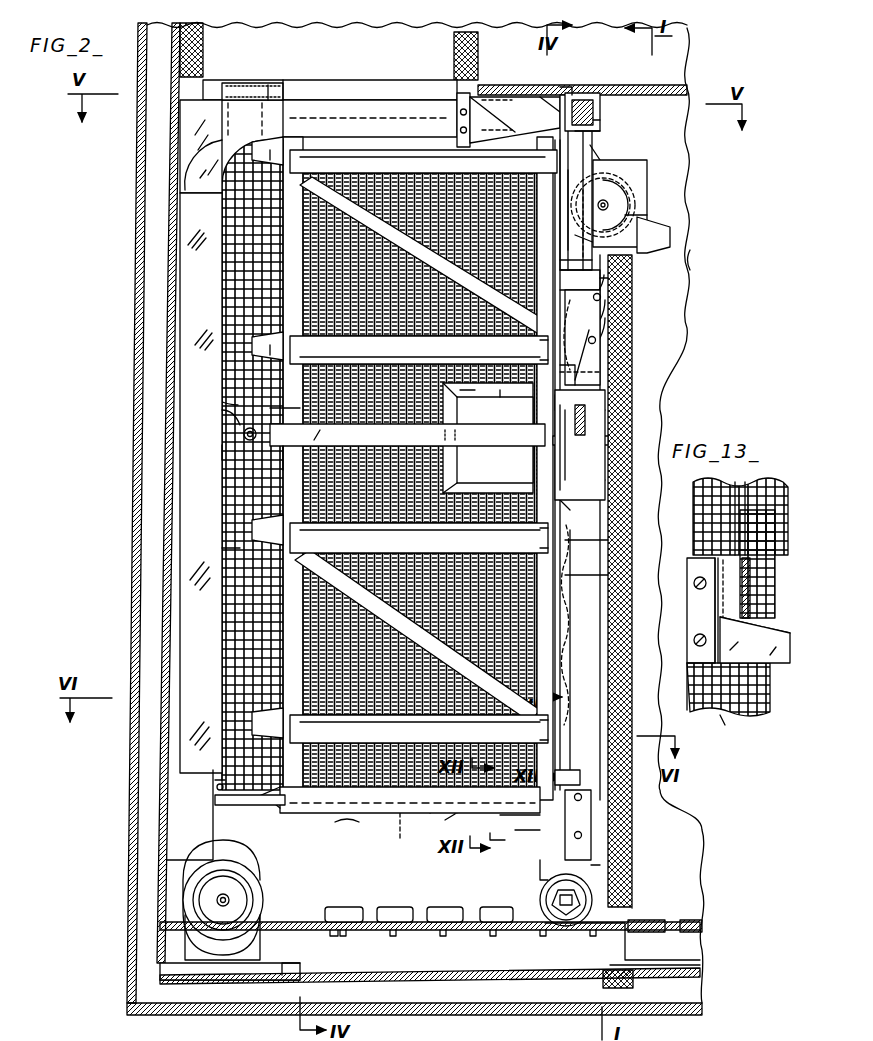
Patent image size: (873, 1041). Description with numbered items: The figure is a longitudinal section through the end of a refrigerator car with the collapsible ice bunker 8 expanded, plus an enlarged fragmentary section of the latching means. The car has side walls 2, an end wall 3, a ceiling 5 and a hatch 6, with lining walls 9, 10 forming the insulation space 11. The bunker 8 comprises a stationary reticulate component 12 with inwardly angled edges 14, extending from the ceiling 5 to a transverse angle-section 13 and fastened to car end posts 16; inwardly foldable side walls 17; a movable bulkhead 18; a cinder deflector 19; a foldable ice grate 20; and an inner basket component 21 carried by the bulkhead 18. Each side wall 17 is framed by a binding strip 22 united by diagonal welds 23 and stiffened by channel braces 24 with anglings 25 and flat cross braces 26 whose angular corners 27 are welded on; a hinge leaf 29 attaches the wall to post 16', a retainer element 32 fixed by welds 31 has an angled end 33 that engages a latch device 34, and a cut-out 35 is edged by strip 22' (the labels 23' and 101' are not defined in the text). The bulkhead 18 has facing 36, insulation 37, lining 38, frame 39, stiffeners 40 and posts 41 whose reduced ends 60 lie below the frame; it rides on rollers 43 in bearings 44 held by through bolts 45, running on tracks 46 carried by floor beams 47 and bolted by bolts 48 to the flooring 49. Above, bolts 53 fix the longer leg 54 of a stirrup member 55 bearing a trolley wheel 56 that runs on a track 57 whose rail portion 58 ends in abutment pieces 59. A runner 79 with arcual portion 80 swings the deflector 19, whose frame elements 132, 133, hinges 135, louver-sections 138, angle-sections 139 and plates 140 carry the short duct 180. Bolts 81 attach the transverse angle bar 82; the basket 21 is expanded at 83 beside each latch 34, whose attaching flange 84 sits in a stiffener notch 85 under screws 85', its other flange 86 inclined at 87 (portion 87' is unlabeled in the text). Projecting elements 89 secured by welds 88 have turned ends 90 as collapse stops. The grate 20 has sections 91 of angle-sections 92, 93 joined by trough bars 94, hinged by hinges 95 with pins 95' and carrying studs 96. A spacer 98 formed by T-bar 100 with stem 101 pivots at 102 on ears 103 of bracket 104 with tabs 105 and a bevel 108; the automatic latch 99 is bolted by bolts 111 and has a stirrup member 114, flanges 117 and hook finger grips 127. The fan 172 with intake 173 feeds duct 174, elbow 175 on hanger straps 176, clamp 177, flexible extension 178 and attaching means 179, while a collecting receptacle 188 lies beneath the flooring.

In FIG. 2, the side wall 2 is at (686, 342).
In FIG. 2, the end wall 3 is at (135, 458).
In FIG. 2, the inner roof or ceiling 5 is at (608, 87).
In FIG. 2, the hatch 6 is at (454, 56).
In FIG. 2, the collapsible bunker 8 is at (215, 670).
In FIG. 2, the side lining wall 9 is at (690, 285).
In FIG. 2, the end lining wall 10 is at (175, 333).
In FIG. 2, the insulation space 11 is at (165, 502).
In FIG. 2, the stationary end wall or reticulate component 12 is at (220, 552).
In FIG. 2, the transverse angle-section 13 is at (250, 811).
In FIG. 2, the inwardly angled side edges 14 is at (222, 275).
In FIG. 2, the vertical posts 16 is at (234, 457).
In FIG. 2, the vertical post 16' is at (263, 79).
In FIG. 2, the side walls 17 is at (379, 88).
In FIG. 2, the movable bulkhead 18 is at (636, 360).
In FIG. 2, the cinder deflector 19 is at (602, 160).
In FIG. 2, the ice grate 20 is at (410, 816).
In FIG. 2, the inner basket component 21 is at (563, 643).
In FIG. 13, the inner basket component 21 is at (750, 514).
In FIG. 2, the binding strip 22 is at (432, 450).
In FIG. 2, the strip 22' is at (509, 406).
In FIG. 2, the diagonal welds 23 is at (305, 446).
In FIG. 2, the corner member 23' is at (471, 406).
In FIG. 2, the transverse braces 24 is at (370, 417).
In FIG. 2, the anglings 25 is at (422, 169).
In FIG. 2, the cross braces 26 is at (412, 257).
In FIG. 2, the angular corners 27 is at (559, 302).
In FIG. 2, the hinge leaf 29 is at (278, 148).
In FIG. 2, the welds 31 is at (530, 350).
In FIG. 2, the retainer element 32 is at (576, 740).
In FIG. 13, the retainer element 32 is at (750, 575).
In FIG. 2, the outwardly angled end 33 is at (563, 372).
In FIG. 13, the outwardly angled end 33 is at (750, 555).
In FIG. 13, the latch device 34 is at (723, 620).
In FIG. 2, the cut-out 35 is at (515, 478).
In FIG. 2, the tongue-and-groove facing 36 is at (600, 517).
In FIG. 2, the insulation 37 is at (608, 574).
In FIG. 2, the tongue-and-groove lining 38 is at (608, 548).
In FIG. 2, the frame 39 is at (632, 320).
In FIG. 2, the vertical stiffeners 40 is at (632, 340).
In FIG. 13, the vertical stiffeners 40 is at (735, 720).
In FIG. 2, the posts 41 is at (595, 665).
In FIG. 2, the rollers 43 is at (538, 902).
In FIG. 2, the bearings 44 is at (591, 868).
In FIG. 2, the through bolts 45 is at (578, 825).
In FIG. 2, the tracks 46 is at (420, 935).
In FIG. 2, the floor beams 47 is at (520, 975).
In FIG. 2, the bolts 48 is at (385, 936).
In FIG. 2, the car flooring 49 is at (352, 915).
In FIG. 2, the bolts 53 is at (586, 318).
In FIG. 2, the longer leg 54 is at (662, 243).
In FIG. 2, the inverted stirrup member 55 is at (620, 170).
In FIG. 2, the trolley wheel 56 is at (632, 197).
In FIG. 2, the track 57 is at (648, 175).
In FIG. 2, the rail portion 58 is at (564, 218).
In FIG. 2, the abutment pieces 59 is at (648, 226).
In FIG. 2, the reduced upper end 60 is at (590, 411).
In FIG. 2, the runner 79 is at (640, 282).
In FIG. 2, the arcual portion 80 is at (585, 244).
In FIG. 2, the bolts 81 is at (576, 779).
In FIG. 2, the transverse angle bar 82 is at (538, 865).
In FIG. 2, the expanded portion 83 is at (568, 605).
In FIG. 2, the attaching flange 84 is at (570, 580).
In FIG. 13, the attaching flange 84 is at (688, 665).
In FIG. 13, the notch 85 is at (687, 598).
In FIG. 13, the screws 85' is at (682, 611).
In FIG. 13, the flange 86 is at (712, 602).
In FIG. 13, the inclined portion 87 is at (756, 612).
In FIG. 13, the plate 87' is at (755, 640).
In FIG. 2, the welds 88 is at (526, 841).
In FIG. 2, the projecting elements 89 is at (467, 803).
In FIG. 2, the downwardly turned free ends 90 is at (449, 826).
In FIG. 2, the grate sections 91 is at (399, 826).
In FIG. 2, the outer angle-section 92 is at (266, 817).
In FIG. 2, the inner angle-section 93 is at (520, 806).
In FIG. 2, the trough-like bars 94 is at (428, 824).
In FIG. 2, the hinges 95 is at (231, 798).
In FIG. 2, the hinge pins 95' is at (200, 781).
In FIG. 2, the studs 96 is at (499, 842).
In FIG. 2, the spacer 98 is at (286, 408).
In FIG. 2, the automatic latch 99 is at (538, 442).
In FIG. 2, the T-section bar 100 is at (407, 435).
In FIG. 2, the stem 101 is at (296, 460).
In FIG. 2, the arm 101' is at (331, 436).
In FIG. 2, the pivot 102 is at (257, 434).
In FIG. 2, the apertured ears 103 is at (565, 240).
In FIG. 2, the channel-section bracket 104 is at (225, 422).
In FIG. 2, the flanking tabs 105 is at (222, 446).
In FIG. 2, the bevel 108 is at (588, 430).
In FIG. 2, the bolts 111 is at (605, 412).
In FIG. 2, the stirrup member 114 is at (578, 470).
In FIG. 2, the flanking flanges 117 is at (552, 500).
In FIG. 2, the finger grip 127 is at (577, 401).
In FIG. 2, the upper angle-section element 132 is at (589, 94).
In FIG. 2, the lower angle-section element 133 is at (580, 360).
In FIG. 2, the hinges 135 is at (566, 88).
In FIG. 2, the side louver-sections 138 is at (566, 200).
In FIG. 2, the intermediate transverse angle-sections 139 is at (562, 270).
In FIG. 2, the plates 140 is at (620, 298).
In FIG. 2, the rotary fan 172 is at (265, 890).
In FIG. 2, the intake 173 is at (225, 973).
In FIG. 2, the outflow air duct 174 is at (212, 218).
In FIG. 2, the reducer elbow 175 is at (200, 108).
In FIG. 2, the hanger straps 176 is at (266, 118).
In FIG. 2, the clamp means 177 is at (472, 96).
In FIG. 2, the flexible extension 178 is at (527, 98).
In FIG. 2, the attaching means 179 is at (600, 118).
In FIG. 2, the short duct 180 is at (595, 134).
In FIG. 2, the collecting receptacle 188 is at (430, 984).